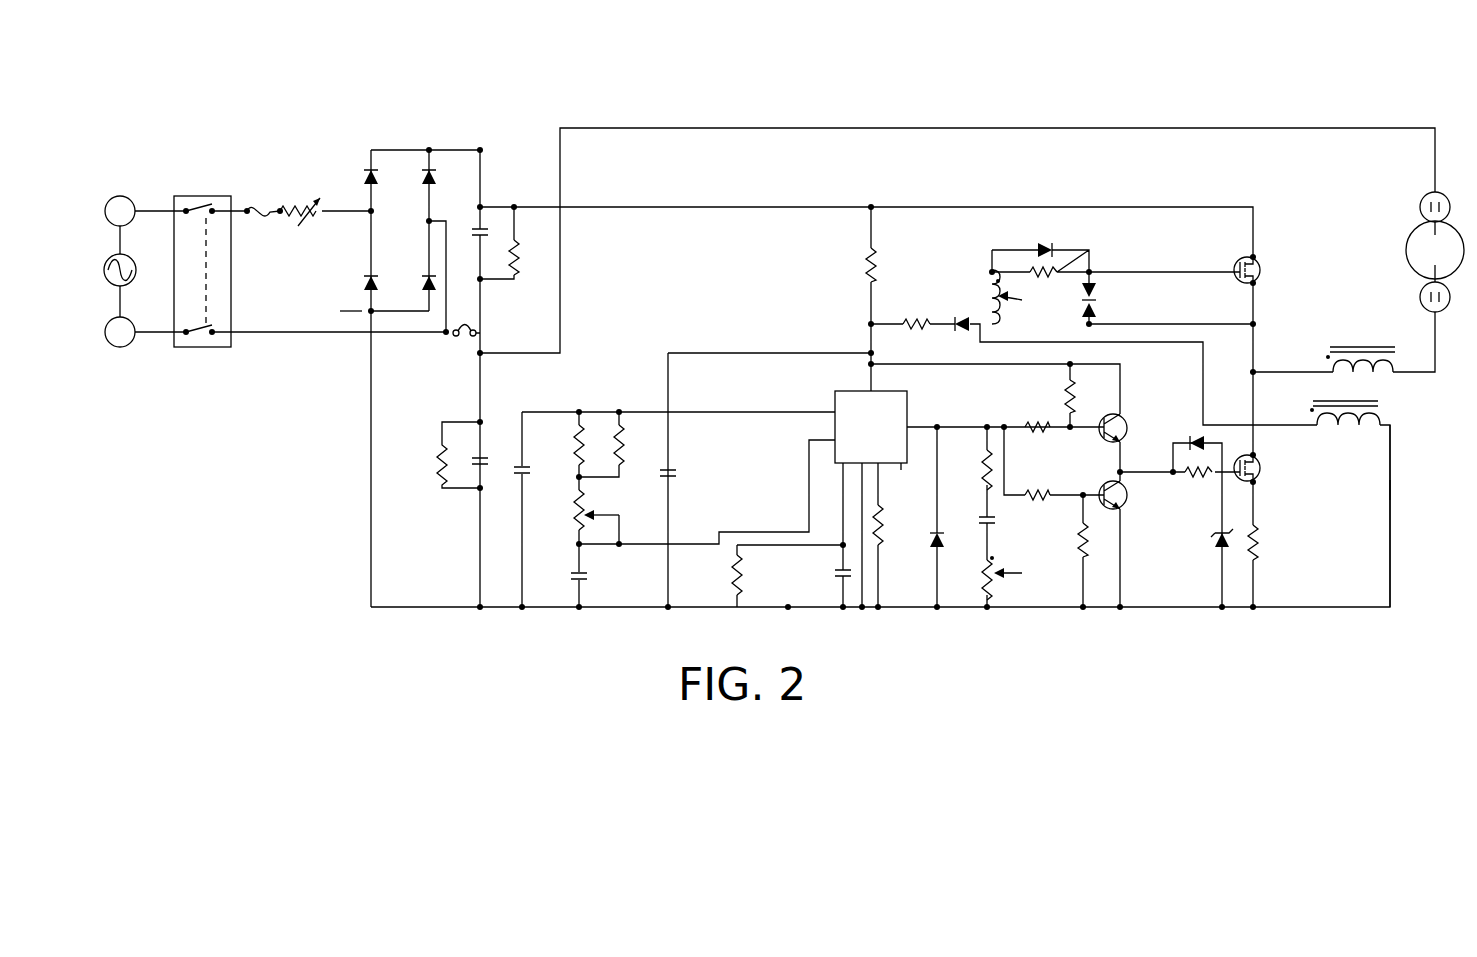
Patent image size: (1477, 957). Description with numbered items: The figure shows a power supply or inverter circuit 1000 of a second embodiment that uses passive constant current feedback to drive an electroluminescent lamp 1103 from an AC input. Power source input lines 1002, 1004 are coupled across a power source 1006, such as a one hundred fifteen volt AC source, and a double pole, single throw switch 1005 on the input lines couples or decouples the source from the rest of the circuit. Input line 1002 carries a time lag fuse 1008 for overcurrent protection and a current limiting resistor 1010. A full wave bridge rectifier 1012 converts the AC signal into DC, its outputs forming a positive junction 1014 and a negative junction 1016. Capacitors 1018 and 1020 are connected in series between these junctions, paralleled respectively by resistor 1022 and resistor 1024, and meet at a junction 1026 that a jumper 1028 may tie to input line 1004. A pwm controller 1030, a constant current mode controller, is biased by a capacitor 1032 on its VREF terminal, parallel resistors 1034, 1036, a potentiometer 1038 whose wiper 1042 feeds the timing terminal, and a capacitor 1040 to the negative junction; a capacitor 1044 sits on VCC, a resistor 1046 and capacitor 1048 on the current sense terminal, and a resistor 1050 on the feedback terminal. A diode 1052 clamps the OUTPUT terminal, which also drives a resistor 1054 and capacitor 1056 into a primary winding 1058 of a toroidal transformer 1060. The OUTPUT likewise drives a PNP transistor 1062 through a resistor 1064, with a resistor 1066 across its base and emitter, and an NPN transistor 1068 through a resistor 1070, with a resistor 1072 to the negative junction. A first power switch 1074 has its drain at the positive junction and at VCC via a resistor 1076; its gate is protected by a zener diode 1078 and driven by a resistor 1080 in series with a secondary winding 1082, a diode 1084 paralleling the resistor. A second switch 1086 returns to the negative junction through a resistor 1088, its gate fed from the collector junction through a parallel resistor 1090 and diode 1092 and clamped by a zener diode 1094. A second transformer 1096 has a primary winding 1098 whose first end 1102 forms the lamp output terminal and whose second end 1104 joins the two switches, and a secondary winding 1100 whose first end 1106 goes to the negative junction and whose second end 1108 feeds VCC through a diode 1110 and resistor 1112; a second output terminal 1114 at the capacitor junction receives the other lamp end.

The power supply or inverter circuit 1000 is at (840, 111).
The power source input line 1002 is at (158, 207).
The power source input line 1004 is at (158, 336).
The double pole, single throw switch 1005 is at (224, 180).
The power source 1006 is at (133, 278).
The time lag fuse 1008 is at (268, 212).
The current limiting resistor 1010 is at (306, 218).
The full wave bridge rectifier 1012 is at (438, 117).
The positive junction 1014 is at (471, 150).
The negative junction 1016 is at (371, 311).
The capacitor 1018 is at (482, 228).
The capacitor 1020 is at (477, 470).
The resistor 1022 is at (516, 256).
The resistor 1024 is at (438, 463).
The junction 1026 is at (478, 354).
The jumper 1028 is at (470, 326).
The pwm controller 1030 is at (908, 402).
The capacitor 1032 is at (520, 462).
The resistor 1034 is at (584, 440).
The resistor 1036 is at (625, 440).
The potentiometer 1038 is at (575, 520).
The capacitor 1040 is at (585, 578).
The wiper 1042 is at (604, 516).
The capacitor 1044 is at (672, 470).
The resistor 1046 is at (733, 572).
The capacitor 1048 is at (838, 578).
The resistor 1050 is at (884, 524).
The diode 1052 is at (942, 550).
The resistor 1054 is at (983, 463).
The capacitor 1056 is at (992, 526).
The primary winding 1058 is at (986, 572).
The transformer 1060 is at (1038, 435).
The PNP transistor 1062 is at (1125, 420).
The resistor 1064 is at (1040, 432).
The resistor 1066 is at (1063, 400).
The NPN transistor 1068 is at (1123, 509).
The resistor 1070 is at (1036, 490).
The resistor 1072 is at (1090, 546).
The first power switch 1074 is at (1262, 272).
The resistor 1076 is at (866, 258).
The zener diode 1078 is at (1098, 306).
The resistor 1080 is at (1092, 262).
The secondary winding 1082 is at (988, 296).
The diode 1084 is at (1045, 246).
The second switch 1086 is at (1263, 470).
The resistor 1088 is at (1257, 546).
The resistor 1090 is at (1203, 478).
The diode 1092 is at (1192, 440).
The zener diode 1094 is at (1218, 545).
The second transformer 1096 is at (1358, 393).
The primary winding 1098 is at (1356, 346).
The secondary winding 1100 is at (1350, 426).
The first end 1102 is at (1422, 300).
The electroluminescent lamp 1103 is at (1408, 250).
The second end 1104 is at (1256, 371).
The first end 1106 is at (1392, 487).
The second end 1108 is at (1287, 420).
The diode 1110 is at (962, 315).
The resistor 1112 is at (903, 334).
The second output terminal 1114 is at (1422, 200).